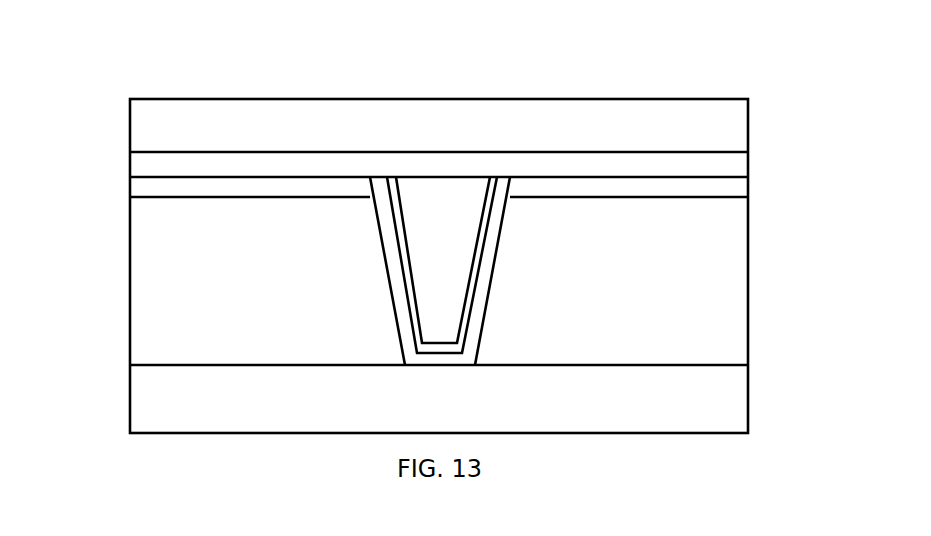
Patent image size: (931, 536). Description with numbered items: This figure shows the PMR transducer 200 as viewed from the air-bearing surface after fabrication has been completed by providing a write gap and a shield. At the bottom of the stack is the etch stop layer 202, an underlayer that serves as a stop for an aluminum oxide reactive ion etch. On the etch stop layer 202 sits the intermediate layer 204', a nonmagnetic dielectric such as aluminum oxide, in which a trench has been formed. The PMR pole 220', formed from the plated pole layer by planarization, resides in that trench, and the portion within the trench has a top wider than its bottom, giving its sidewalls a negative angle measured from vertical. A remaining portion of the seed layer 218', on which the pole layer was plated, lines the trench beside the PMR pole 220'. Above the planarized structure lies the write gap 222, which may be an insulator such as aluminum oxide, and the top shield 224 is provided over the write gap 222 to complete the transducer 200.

The PMR transducer 200 is at (462, 33).
The etch stop layer 202 is at (748, 385).
The intermediate layer 204' is at (439, 268).
The seed layer 218' is at (497, 208).
The PMR pole 220' is at (417, 206).
The write gap 222 is at (285, 152).
The top shield 224 is at (128, 113).